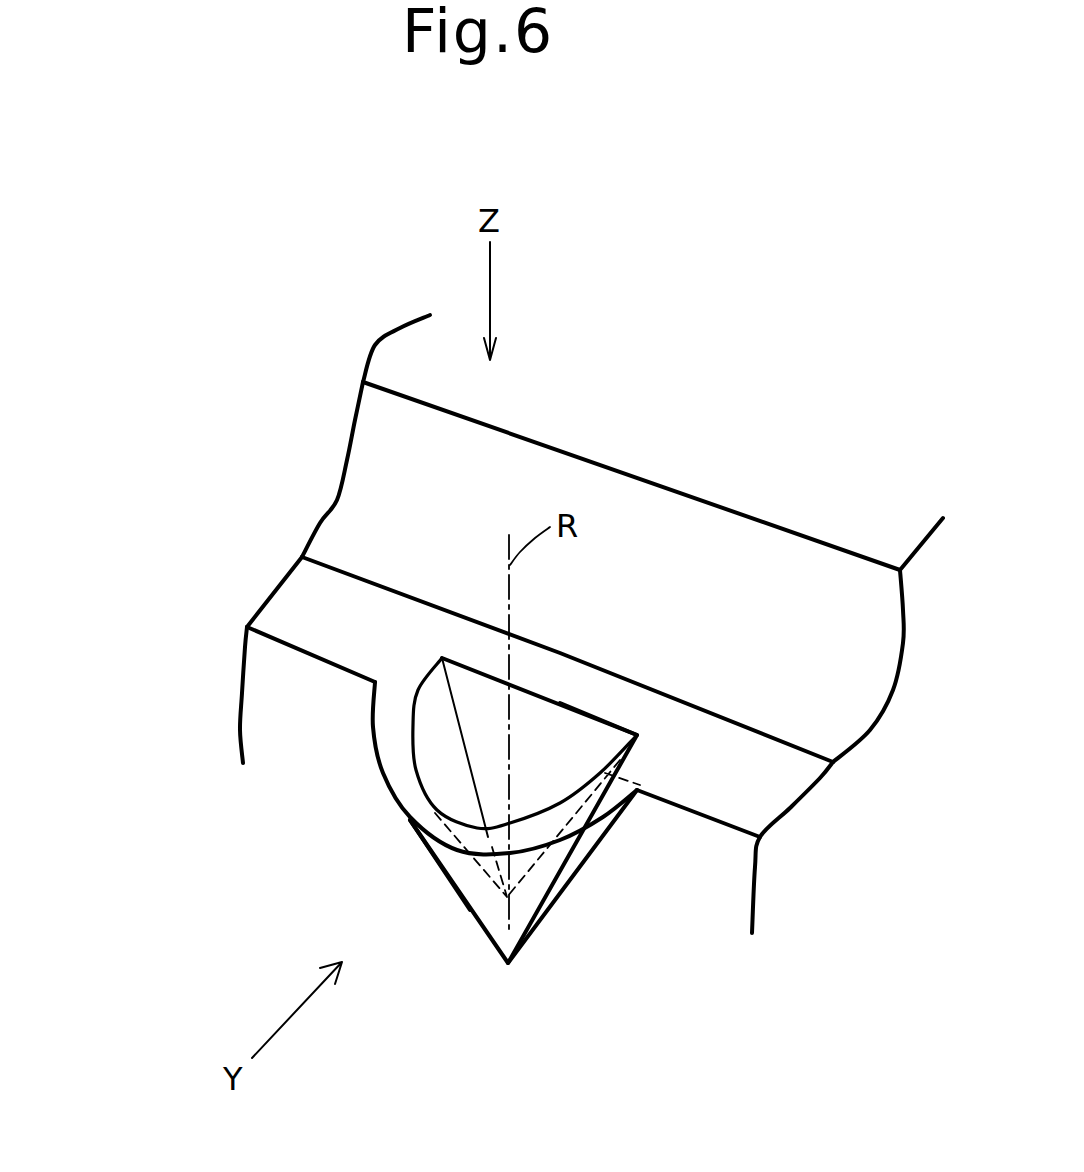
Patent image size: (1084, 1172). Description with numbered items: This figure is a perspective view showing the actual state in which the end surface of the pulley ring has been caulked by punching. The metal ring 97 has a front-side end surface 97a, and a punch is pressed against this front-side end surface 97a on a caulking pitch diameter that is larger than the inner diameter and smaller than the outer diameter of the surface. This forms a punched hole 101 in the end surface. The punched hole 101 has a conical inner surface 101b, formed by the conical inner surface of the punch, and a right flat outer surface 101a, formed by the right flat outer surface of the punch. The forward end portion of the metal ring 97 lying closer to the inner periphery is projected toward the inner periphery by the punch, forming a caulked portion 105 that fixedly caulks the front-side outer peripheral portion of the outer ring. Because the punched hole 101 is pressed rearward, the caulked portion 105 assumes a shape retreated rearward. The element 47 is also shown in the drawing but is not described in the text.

The tool holder body 47 is at (397, 492).
The metal ring 97 is at (678, 883).
The front-side end surface 97a is at (353, 632).
The punched hole 101 is at (425, 752).
The right flat outer surface 101a is at (577, 747).
The conical inner surface 101b is at (440, 723).
The caulked portion 105 is at (413, 833).